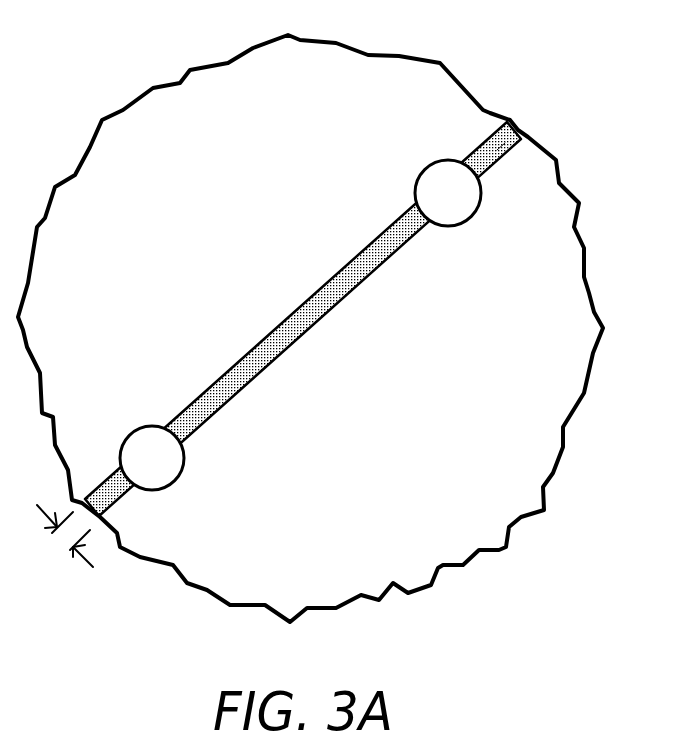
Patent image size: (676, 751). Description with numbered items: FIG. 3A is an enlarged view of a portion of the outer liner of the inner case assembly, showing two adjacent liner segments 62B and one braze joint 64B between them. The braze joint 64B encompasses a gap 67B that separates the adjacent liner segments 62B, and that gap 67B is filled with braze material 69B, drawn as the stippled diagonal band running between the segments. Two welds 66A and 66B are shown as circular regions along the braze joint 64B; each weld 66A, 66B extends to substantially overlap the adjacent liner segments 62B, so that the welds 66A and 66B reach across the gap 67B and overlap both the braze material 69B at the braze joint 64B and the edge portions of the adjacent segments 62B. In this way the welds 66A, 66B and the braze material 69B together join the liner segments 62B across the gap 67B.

The liner segments 62B is at (237, 241).
The braze joint 64B is at (513, 100).
The weld 66A is at (469, 203).
The weld 66B is at (173, 468).
The gap 67B is at (88, 558).
The braze material 69B is at (497, 150).